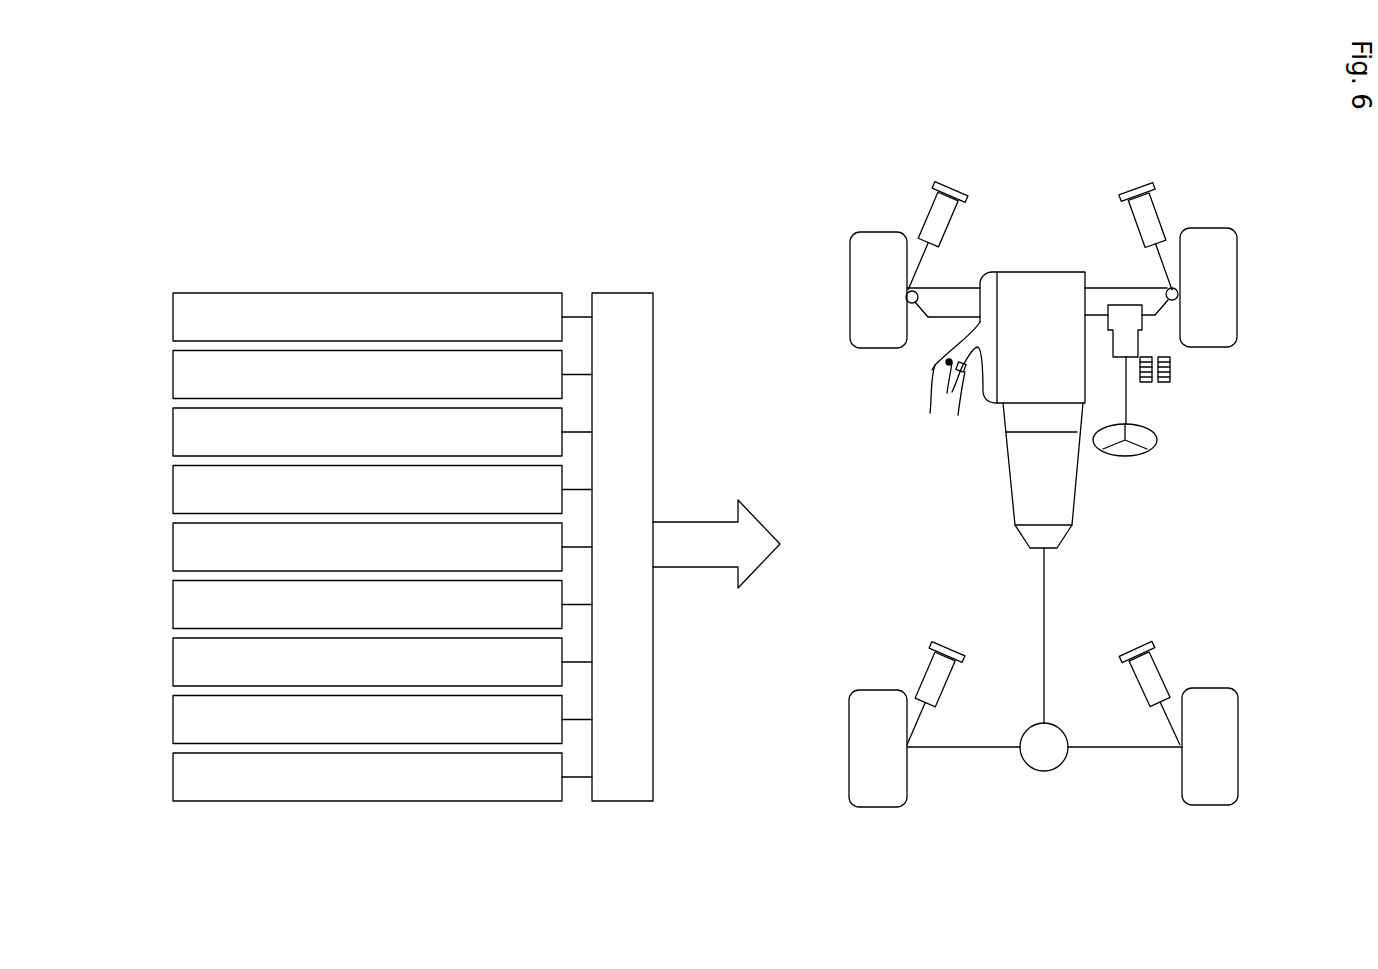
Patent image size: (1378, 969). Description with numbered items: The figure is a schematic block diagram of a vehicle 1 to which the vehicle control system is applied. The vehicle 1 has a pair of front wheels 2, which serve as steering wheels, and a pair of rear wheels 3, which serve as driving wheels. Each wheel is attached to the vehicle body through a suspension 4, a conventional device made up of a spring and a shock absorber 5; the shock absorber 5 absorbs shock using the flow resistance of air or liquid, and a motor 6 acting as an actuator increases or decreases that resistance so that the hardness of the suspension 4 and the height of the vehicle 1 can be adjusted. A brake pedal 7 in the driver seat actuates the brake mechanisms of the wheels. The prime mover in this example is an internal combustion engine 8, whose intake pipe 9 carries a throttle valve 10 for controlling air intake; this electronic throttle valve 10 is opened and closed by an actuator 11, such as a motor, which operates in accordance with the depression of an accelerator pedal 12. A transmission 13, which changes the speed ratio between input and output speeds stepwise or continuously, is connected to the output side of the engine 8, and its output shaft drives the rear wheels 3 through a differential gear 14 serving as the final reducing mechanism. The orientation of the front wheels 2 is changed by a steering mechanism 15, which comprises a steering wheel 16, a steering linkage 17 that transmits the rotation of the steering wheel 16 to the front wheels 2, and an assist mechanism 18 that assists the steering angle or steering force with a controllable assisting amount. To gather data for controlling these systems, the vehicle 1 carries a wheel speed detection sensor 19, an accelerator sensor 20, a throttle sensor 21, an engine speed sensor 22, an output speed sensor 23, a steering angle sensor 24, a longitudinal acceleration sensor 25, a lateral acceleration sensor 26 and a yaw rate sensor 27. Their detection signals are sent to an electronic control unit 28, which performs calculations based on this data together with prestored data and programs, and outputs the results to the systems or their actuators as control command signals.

The vehicle 1 is at (866, 195).
The front wheel 2 is at (865, 262).
The rear wheel 3 is at (881, 808).
The suspension 4 is at (1048, 409).
The shock absorber 5 is at (952, 222).
The motor 6 is at (932, 148).
The brake pedal 7 is at (1195, 404).
The internal combustion engine 8 is at (1032, 337).
The intake pipe 9 is at (933, 367).
The throttle valve 10 is at (933, 397).
The actuator 11 is at (967, 387).
The accelerator pedal 12 is at (1147, 385).
The transmission 13 is at (1078, 490).
The differential gear 14 is at (1050, 771).
The steering mechanism 15 is at (1105, 280).
The steering wheel 16 is at (1140, 452).
The steering linkage 17 is at (1145, 311).
The assist mechanism 18 is at (1125, 303).
The wheel speed detection sensor 19 is at (173, 318).
The accelerator sensor 20 is at (173, 375).
The throttle sensor 21 is at (173, 433).
The engine speed sensor 22 is at (173, 490).
The output speed sensor 23 is at (173, 548).
The steering angle sensor 24 is at (173, 605).
The longitudinal acceleration sensor 25 is at (173, 663).
The lateral acceleration sensor 26 is at (173, 720).
The yaw rate sensor 27 is at (173, 778).
The electronic control unit 28 is at (628, 293).